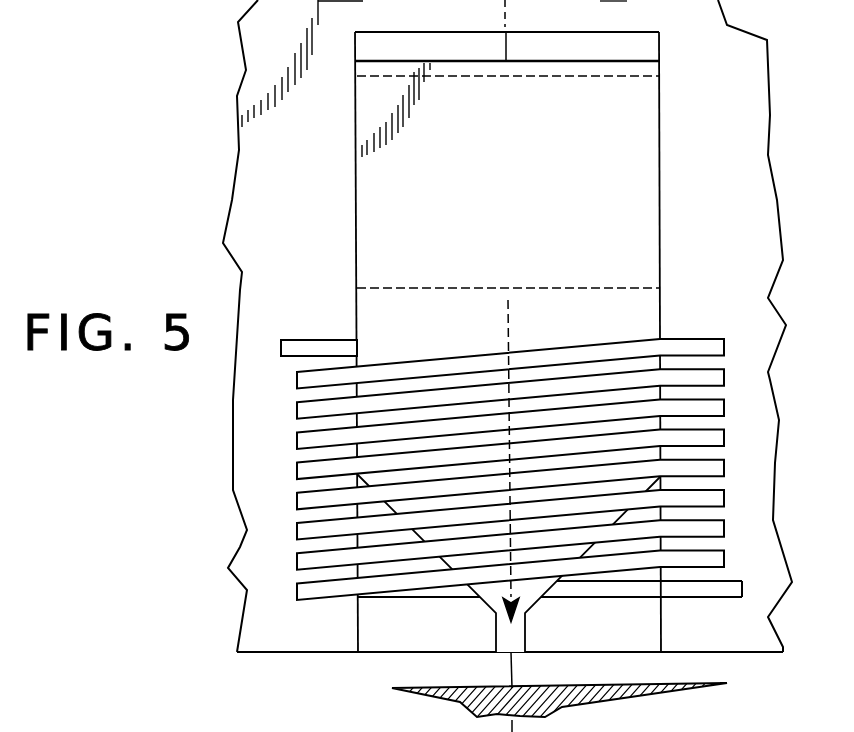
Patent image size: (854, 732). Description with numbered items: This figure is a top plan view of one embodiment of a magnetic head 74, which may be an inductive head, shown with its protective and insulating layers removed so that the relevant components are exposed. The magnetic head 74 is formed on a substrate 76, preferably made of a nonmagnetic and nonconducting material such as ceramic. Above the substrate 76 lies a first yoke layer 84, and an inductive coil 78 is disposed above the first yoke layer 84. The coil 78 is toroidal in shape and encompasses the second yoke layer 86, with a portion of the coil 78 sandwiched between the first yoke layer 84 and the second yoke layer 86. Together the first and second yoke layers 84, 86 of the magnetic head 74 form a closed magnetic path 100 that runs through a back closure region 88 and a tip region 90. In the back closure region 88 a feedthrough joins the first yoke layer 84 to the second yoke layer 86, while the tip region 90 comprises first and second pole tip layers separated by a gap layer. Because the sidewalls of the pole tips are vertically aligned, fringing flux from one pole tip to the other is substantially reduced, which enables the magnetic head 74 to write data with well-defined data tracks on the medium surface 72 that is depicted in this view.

The medium surface 72 is at (422, 688).
The magnetic head 74 is at (160, 140).
The substrate 76 is at (250, 503).
The inductive coil 78 is at (297, 409).
The first yoke layer 84 is at (382, 625).
The second yoke layer 86 is at (535, 599).
The back closure region 88 is at (375, 177).
The tip region 90 is at (531, 669).
The closed magnetic path 100 is at (508, 321).